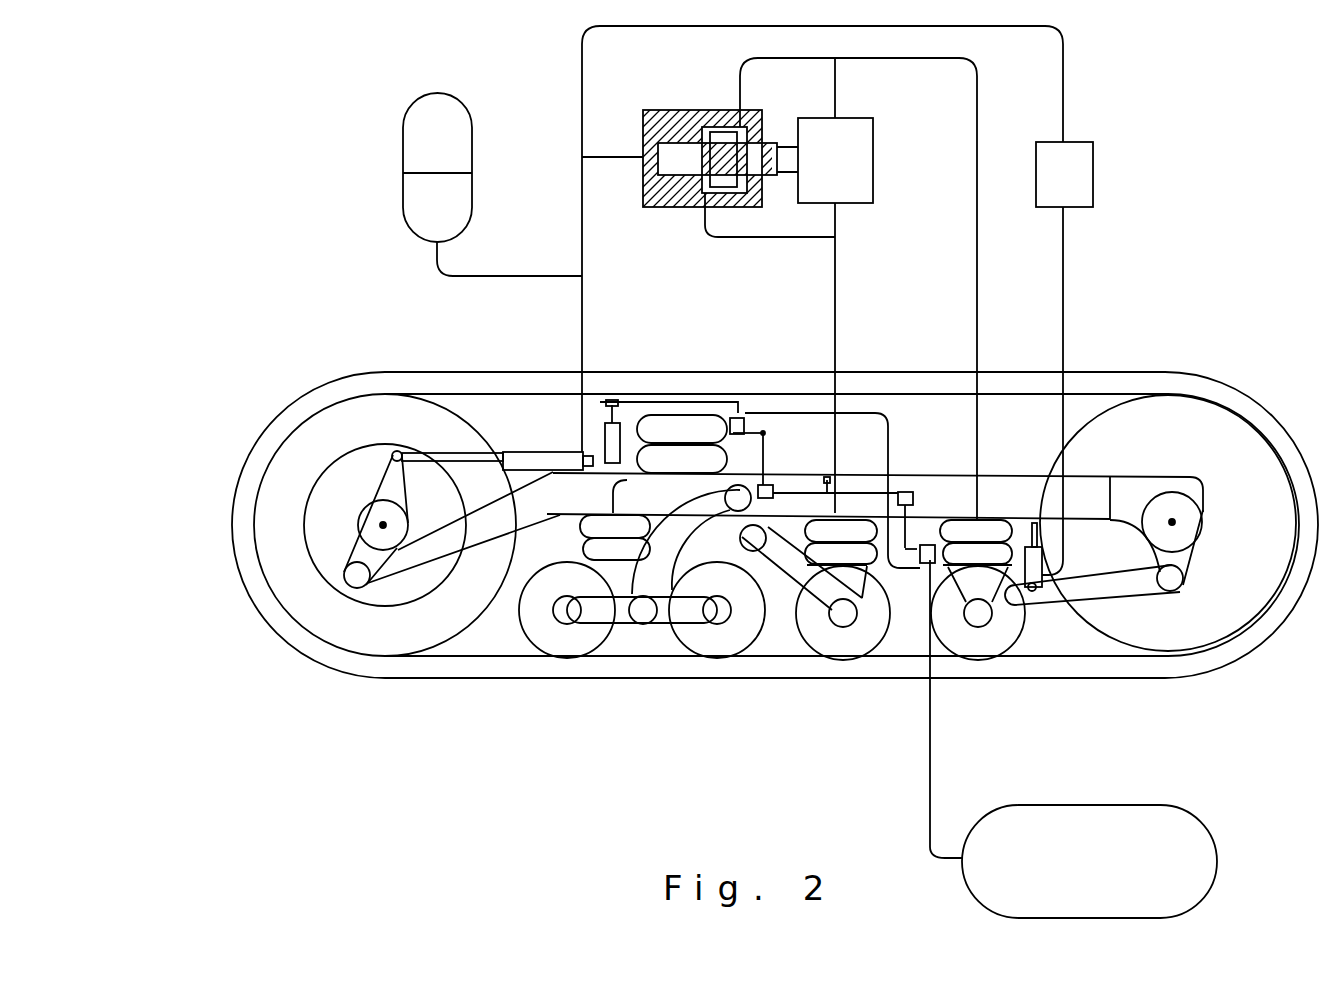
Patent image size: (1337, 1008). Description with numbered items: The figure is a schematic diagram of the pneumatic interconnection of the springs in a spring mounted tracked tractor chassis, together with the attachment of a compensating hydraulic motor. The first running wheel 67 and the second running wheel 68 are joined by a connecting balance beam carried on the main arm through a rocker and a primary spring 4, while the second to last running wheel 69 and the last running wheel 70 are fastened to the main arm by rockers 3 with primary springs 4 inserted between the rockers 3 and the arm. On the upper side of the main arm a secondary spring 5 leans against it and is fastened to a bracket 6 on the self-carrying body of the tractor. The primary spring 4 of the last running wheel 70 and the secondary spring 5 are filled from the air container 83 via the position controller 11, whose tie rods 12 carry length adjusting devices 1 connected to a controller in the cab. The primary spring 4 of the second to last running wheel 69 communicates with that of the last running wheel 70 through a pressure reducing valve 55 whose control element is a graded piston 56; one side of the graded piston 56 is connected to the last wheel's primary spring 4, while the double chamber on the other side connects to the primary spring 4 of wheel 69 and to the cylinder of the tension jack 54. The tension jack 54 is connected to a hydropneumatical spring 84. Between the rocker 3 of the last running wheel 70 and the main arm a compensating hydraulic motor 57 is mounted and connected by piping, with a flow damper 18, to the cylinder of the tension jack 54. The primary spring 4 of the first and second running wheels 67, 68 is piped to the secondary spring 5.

The length adjusting device 1 is at (907, 520).
The rocker 3 is at (1128, 590).
The primary spring 4 is at (553, 517).
The secondary spring 5 is at (598, 525).
The bracket 6 is at (680, 410).
The position controller 11 is at (755, 413).
The tie rod 12 is at (763, 460).
The flow damper 18 is at (1077, 197).
The tension jack 54 is at (535, 452).
The pressure reducing valve 55 is at (955, 190).
The graded piston 56 is at (720, 140).
The compensating hydraulic motor 57 is at (1040, 590).
The first running wheel 67 is at (533, 610).
The second running wheel 68 is at (693, 640).
The second to last running wheel 69 is at (838, 650).
The last running wheel 70 is at (987, 647).
The air container 83 is at (1177, 832).
The hydropneumatical spring 84 is at (420, 217).